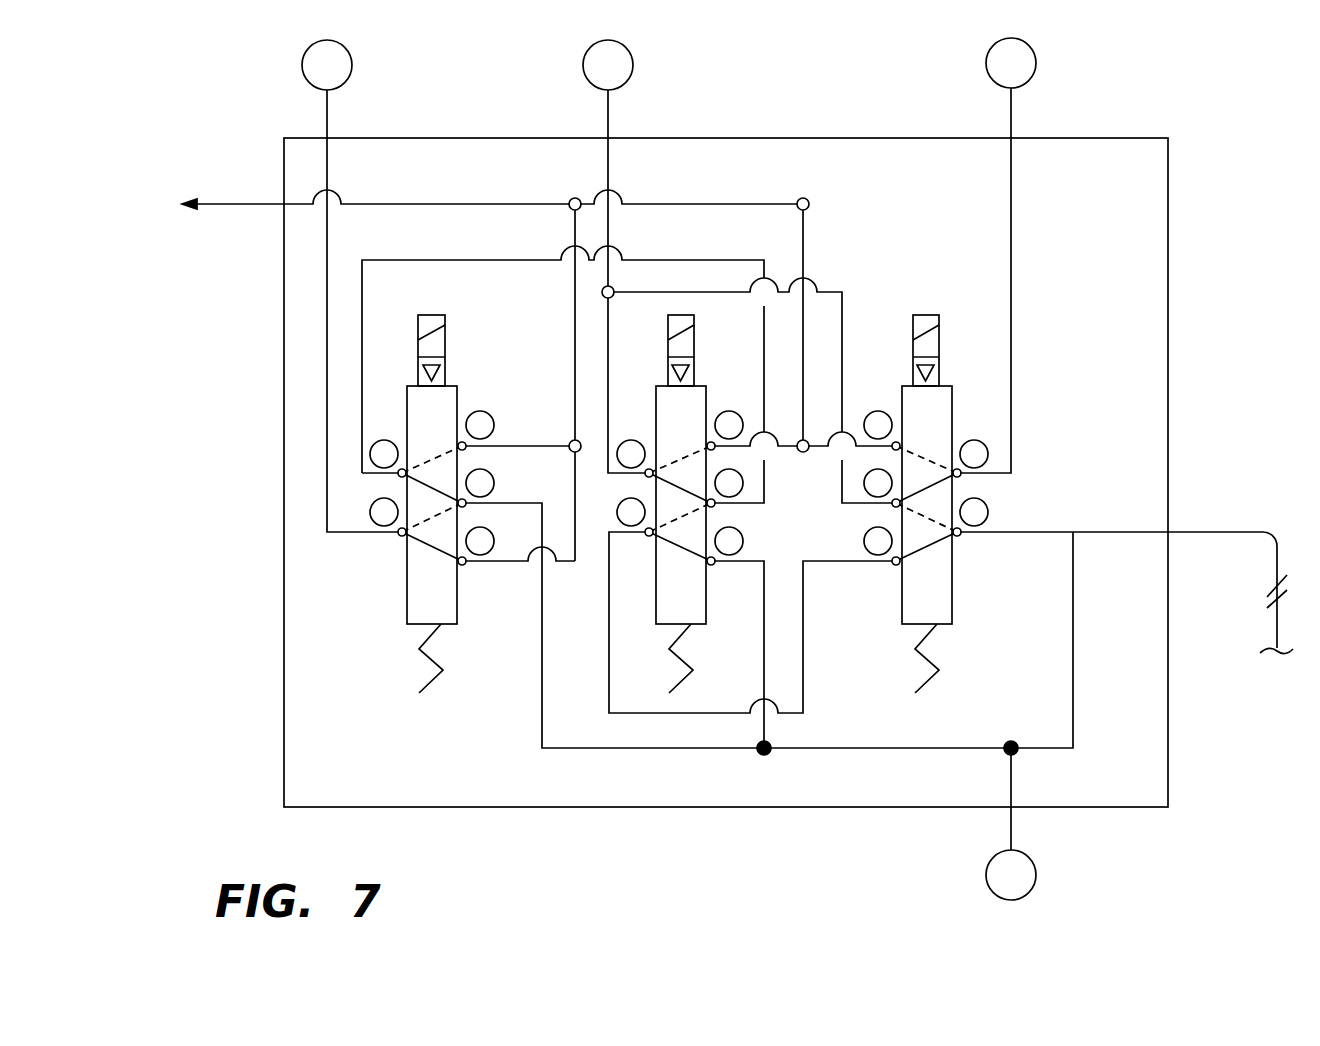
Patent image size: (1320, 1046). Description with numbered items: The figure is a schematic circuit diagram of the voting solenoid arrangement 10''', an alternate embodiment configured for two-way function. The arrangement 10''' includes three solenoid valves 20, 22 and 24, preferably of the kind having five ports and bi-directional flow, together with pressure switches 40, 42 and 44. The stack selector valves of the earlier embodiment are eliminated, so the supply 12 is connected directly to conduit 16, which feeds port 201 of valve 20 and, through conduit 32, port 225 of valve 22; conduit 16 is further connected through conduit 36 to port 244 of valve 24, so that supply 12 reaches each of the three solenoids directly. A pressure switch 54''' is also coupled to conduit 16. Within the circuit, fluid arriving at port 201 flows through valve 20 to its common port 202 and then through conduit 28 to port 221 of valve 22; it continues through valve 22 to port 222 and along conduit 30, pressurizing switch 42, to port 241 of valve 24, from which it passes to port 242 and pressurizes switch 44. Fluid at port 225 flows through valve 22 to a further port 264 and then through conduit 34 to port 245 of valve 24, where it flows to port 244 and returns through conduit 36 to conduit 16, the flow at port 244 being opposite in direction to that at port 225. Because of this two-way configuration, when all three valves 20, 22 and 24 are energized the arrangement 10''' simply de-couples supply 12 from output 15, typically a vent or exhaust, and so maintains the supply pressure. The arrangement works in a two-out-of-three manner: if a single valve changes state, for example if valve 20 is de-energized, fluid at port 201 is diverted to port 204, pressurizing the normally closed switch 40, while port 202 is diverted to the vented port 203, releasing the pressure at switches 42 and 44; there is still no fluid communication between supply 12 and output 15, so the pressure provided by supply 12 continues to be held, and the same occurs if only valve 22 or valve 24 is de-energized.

The voting solenoid arrangement 10''' is at (773, 471).
The air supply 12 is at (1277, 688).
The output 15 is at (261, 200).
The conduit 16 is at (1073, 658).
The solenoid valve 20 is at (453, 386).
The solenoid valve 22 is at (702, 386).
The solenoid valve 24 is at (948, 386).
The conduit 28 is at (453, 257).
The conduit 30 is at (642, 293).
The conduit 32 is at (764, 665).
The conduit 34 is at (609, 665).
The conduit 36 is at (1105, 530).
The pressure switch 40 is at (352, 63).
The pressure switch 42 is at (633, 63).
The pressure switch 44 is at (1037, 61).
The pressure switch 54''' is at (1058, 824).
The port 201 is at (464, 563).
The common port 202 is at (400, 476).
The port 203 is at (464, 448).
The common port 204 is at (400, 534).
The port 221 is at (713, 505).
The port 222 is at (647, 477).
The port 225 is at (713, 563).
The port 241 is at (894, 505).
The port 242 is at (959, 475).
The port 244 is at (959, 534).
The port 245 is at (894, 563).
The valve port D 264 is at (648, 535).